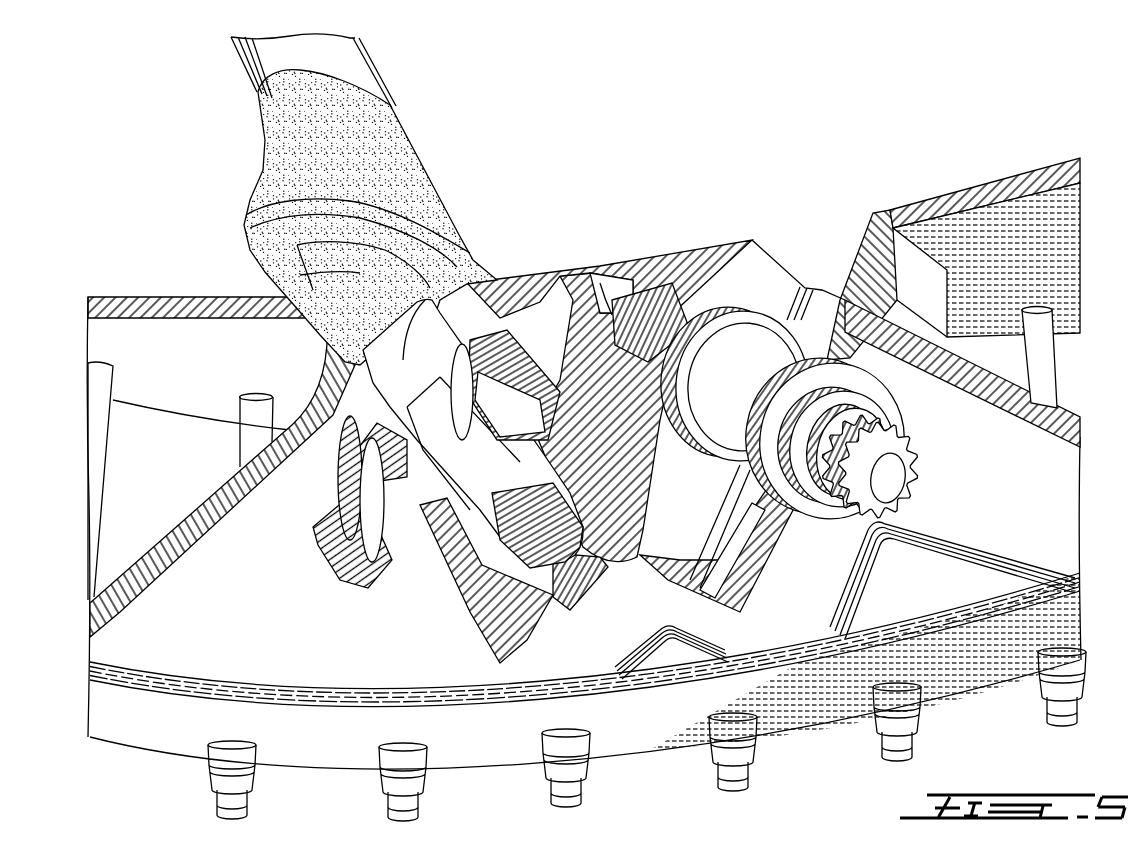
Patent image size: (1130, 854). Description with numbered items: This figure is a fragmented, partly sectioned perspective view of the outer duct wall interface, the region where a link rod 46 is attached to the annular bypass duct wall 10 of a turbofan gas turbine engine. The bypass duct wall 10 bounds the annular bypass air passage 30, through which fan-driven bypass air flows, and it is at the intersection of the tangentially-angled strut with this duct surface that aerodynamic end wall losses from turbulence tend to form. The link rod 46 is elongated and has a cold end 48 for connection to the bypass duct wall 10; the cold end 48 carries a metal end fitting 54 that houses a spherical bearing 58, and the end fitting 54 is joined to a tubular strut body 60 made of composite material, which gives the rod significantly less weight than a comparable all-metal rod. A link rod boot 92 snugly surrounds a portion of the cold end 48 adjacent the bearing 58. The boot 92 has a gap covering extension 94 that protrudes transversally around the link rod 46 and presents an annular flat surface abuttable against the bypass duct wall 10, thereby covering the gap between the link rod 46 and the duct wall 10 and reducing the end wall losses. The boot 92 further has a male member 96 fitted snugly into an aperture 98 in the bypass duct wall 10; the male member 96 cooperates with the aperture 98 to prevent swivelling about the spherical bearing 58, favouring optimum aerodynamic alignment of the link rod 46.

The annular bypass duct wall 10 is at (652, 253).
The annular bypass air passage 30 is at (617, 124).
The link rod 46 is at (360, 66).
The cold end 48 is at (486, 153).
The end fitting 54 is at (440, 292).
The spherical bearing 58 is at (500, 297).
The strut body 60 is at (237, 54).
The link rod boot 92 is at (262, 150).
The gap covering extension 94 is at (262, 233).
The male member 96 is at (360, 273).
The aperture 98 is at (545, 572).